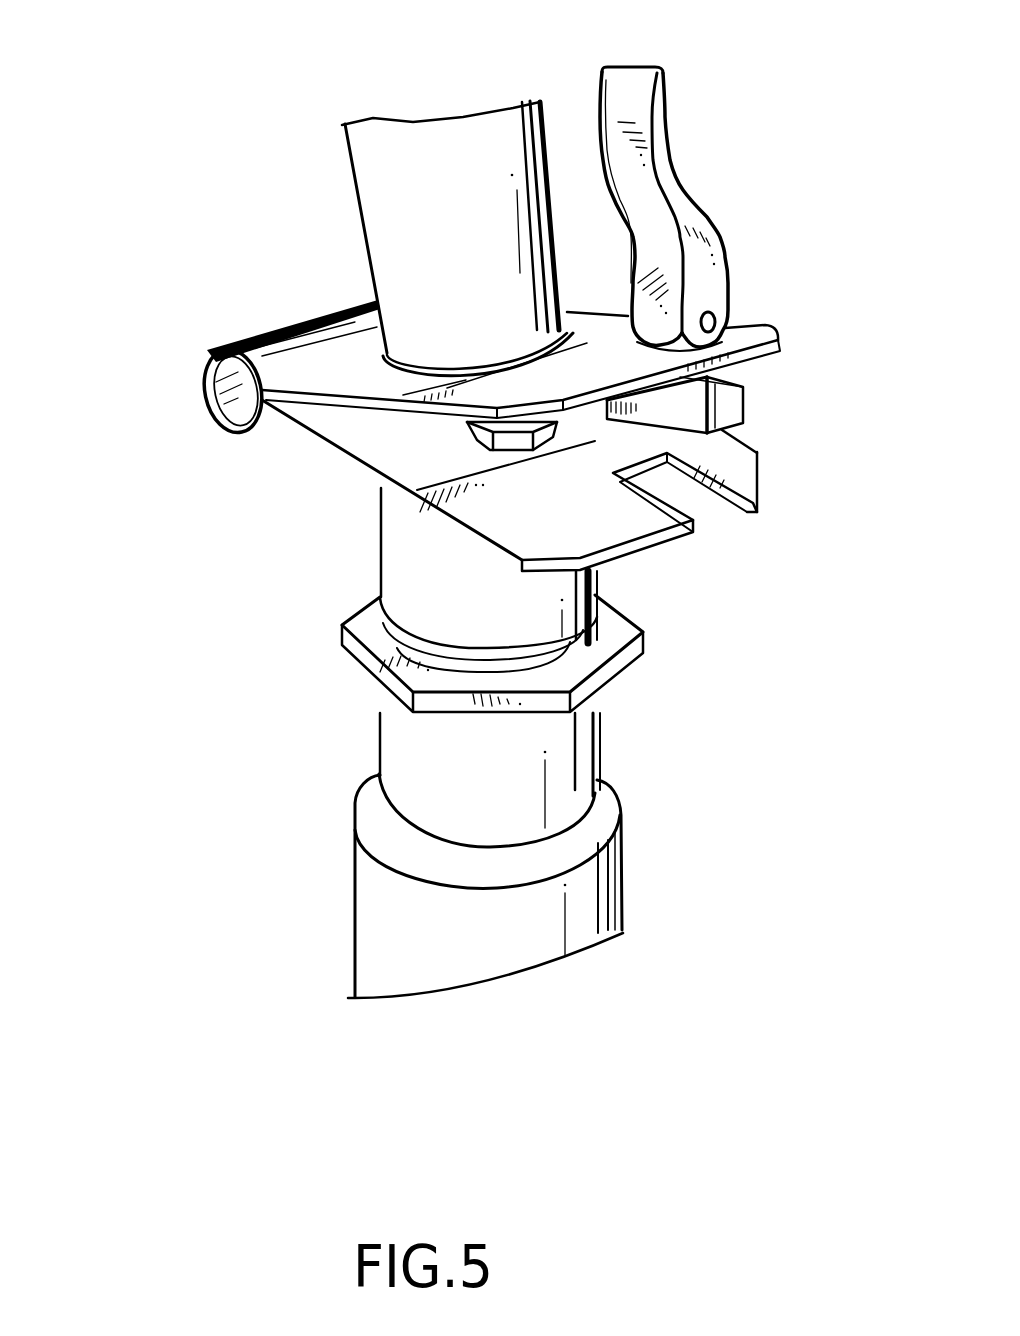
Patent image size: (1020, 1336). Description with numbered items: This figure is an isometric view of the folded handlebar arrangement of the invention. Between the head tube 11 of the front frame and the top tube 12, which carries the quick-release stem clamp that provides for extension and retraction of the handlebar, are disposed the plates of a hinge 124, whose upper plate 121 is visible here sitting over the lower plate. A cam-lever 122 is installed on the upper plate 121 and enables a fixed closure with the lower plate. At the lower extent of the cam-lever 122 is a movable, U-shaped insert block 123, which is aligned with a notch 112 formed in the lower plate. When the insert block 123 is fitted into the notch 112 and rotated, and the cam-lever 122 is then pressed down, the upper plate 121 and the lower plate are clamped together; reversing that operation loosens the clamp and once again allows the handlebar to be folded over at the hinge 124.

The head tube 11 is at (397, 737).
The top tube 12 is at (393, 182).
The notch 112 is at (702, 508).
The upper plate 121 is at (763, 323).
The cam-lever 122 is at (663, 133).
The insert block 123 is at (743, 398).
The hinge 124 is at (210, 408).